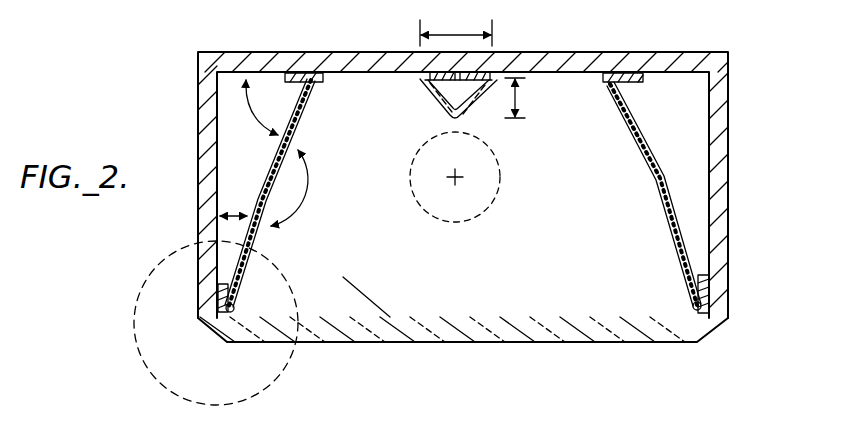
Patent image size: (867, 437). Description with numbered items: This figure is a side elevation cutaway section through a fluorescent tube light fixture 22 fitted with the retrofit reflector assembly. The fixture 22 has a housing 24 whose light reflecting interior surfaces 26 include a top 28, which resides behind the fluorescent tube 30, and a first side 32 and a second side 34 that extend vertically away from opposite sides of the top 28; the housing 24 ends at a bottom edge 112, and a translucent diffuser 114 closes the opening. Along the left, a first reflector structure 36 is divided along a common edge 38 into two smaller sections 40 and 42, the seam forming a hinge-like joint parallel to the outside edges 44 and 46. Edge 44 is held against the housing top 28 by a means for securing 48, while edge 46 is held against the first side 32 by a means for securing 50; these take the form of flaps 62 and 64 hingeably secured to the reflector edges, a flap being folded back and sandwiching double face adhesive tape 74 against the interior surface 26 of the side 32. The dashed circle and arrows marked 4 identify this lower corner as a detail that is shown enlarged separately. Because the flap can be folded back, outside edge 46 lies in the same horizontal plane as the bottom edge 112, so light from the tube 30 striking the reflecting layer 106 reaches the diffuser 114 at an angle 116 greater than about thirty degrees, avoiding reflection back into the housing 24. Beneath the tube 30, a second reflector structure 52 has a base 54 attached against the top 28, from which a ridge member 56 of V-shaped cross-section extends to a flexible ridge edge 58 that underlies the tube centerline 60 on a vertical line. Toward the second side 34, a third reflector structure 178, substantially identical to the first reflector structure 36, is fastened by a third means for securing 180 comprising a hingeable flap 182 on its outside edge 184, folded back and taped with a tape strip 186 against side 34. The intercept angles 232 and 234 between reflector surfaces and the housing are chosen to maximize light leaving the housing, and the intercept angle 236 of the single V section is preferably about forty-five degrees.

The section line 4 is at (138, 332).
The fluorescent tube light fixture 22 is at (512, 50).
The housing 24 is at (729, 52).
The light reflecting interior surfaces 26 is at (697, 79).
The top 28 is at (590, 62).
The fluorescent tube 30 is at (477, 219).
The first side 32 is at (207, 100).
The second side 34 is at (716, 125).
The first reflector structure 36 is at (266, 152).
The common edge 38 is at (289, 188).
The section 40 is at (260, 248).
The section 42 is at (312, 122).
The outside edge 44 is at (325, 79).
The outside edge 46 is at (240, 312).
The means for securing 48 is at (216, 296).
The means for securing 50 is at (318, 49).
The second reflector structure 52 is at (430, 95).
The base 54 is at (456, 29).
The ridge member 56 is at (518, 94).
The ridge edge 58 is at (462, 119).
The centerline 60 is at (457, 180).
The flap 62 is at (212, 312).
The flap 64 is at (288, 76).
The double face adhesive tape 74 is at (220, 290).
The reflecting layer 106 is at (260, 240).
The bottom edge 112 is at (200, 323).
The translucent diffuser 114 is at (504, 316).
The angle 116 is at (344, 313).
The third reflector structure 178 is at (646, 183).
The third means for securing 180 is at (713, 292).
The hingeable flap 182 is at (706, 284).
The outside edge 184 is at (700, 327).
The tape strip 186 is at (718, 309).
The intercept angle 232 is at (313, 187).
The intercept angle 234 is at (245, 211).
The intercept angle 236 is at (258, 105).